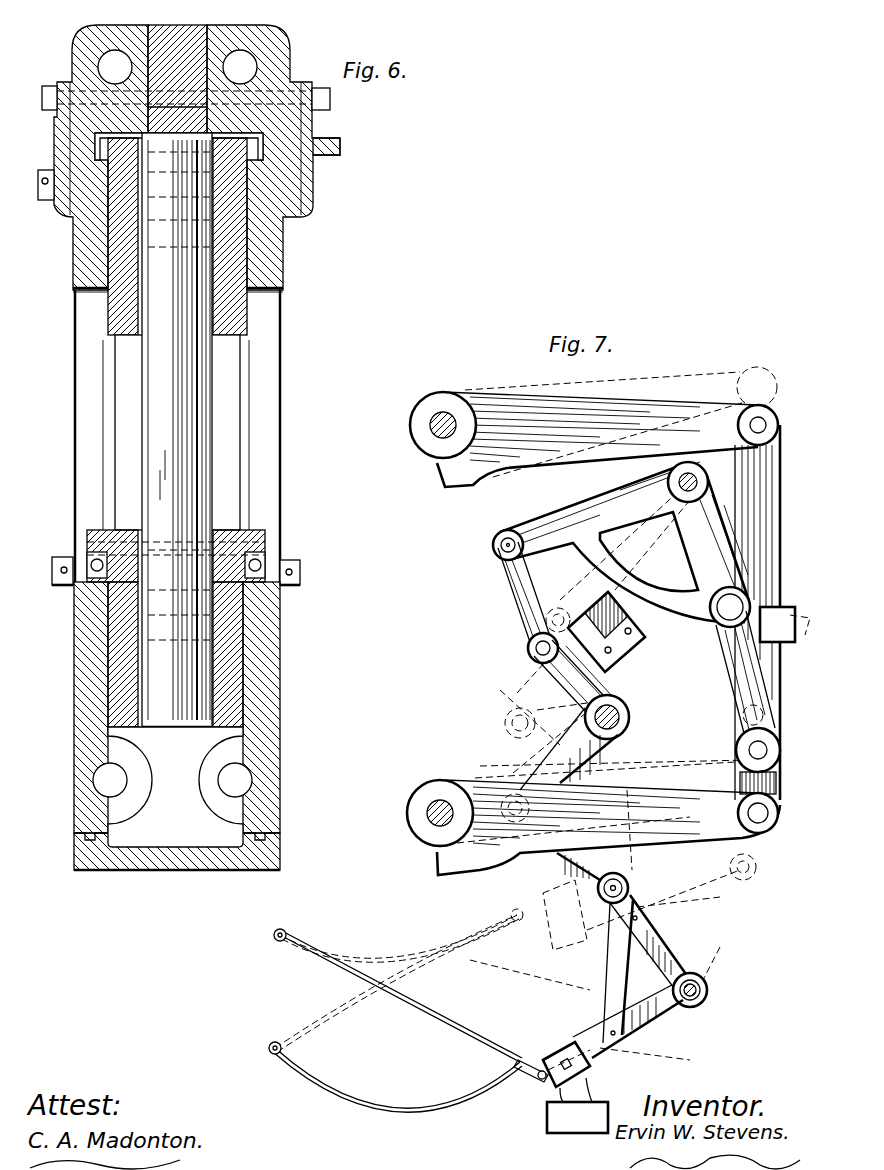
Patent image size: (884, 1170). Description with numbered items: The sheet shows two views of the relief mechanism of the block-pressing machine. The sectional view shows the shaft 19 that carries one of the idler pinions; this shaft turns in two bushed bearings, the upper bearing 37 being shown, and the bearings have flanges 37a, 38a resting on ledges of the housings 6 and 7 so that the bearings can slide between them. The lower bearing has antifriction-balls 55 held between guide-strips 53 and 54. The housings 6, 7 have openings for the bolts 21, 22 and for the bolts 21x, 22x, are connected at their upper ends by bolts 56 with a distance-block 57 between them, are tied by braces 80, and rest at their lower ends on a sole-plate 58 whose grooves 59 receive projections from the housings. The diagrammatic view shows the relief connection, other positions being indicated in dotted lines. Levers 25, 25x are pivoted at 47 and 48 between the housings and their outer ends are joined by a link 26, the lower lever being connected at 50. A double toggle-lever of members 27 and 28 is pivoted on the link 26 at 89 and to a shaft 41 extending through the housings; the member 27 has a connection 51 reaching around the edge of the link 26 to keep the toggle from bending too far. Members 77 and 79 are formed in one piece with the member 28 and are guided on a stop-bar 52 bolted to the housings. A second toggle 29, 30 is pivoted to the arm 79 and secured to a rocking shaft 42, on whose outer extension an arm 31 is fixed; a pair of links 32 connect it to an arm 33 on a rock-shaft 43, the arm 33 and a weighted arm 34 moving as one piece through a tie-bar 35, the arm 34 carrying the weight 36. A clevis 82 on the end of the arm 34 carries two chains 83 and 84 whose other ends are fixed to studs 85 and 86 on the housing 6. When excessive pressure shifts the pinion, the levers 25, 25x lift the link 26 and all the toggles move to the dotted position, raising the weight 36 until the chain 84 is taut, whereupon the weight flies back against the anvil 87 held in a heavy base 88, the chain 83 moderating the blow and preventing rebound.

In FIG. 6, the housing 6 is at (89, 436).
In FIG. 6, the housing 7 is at (264, 436).
In FIG. 6, the shaft 19 is at (150, 500).
In FIG. 7, the shaft 19 is at (780, 425).
In FIG. 6, the bolt 21 is at (115, 67).
In FIG. 6, the bolt 22 is at (240, 67).
In FIG. 6, the bolt 21x is at (110, 780).
In FIG. 6, the bolt 22x is at (235, 780).
In FIG. 7, the lever 25 is at (612, 405).
In FIG. 7, the lever 25x is at (474, 870).
In FIG. 7, the link 26 is at (768, 495).
In FIG. 7, the toggle-lever member 27 is at (720, 675).
In FIG. 7, the toggle-lever member 28 is at (698, 552).
In FIG. 7, the second toggle member 29 is at (515, 605).
In FIG. 7, the second toggle member 30 is at (565, 678).
In FIG. 7, the arm 31 is at (562, 765).
In FIG. 7, the links 32 is at (590, 885).
In FIG. 7, the arm 33 is at (668, 950).
In FIG. 7, the weighted arm 34 is at (648, 1030).
In FIG. 7, the tie-bar 35 is at (618, 982).
In FIG. 7, the weight 36 is at (562, 1054).
In FIG. 6, the bushed bearing 37 is at (118, 312).
In FIG. 6, the flange 37a is at (96, 137).
In FIG. 6, the flange 38a is at (88, 535).
In FIG. 7, the shaft 41 is at (678, 480).
In FIG. 7, the rocking shaft 42 is at (622, 713).
In FIG. 7, the rock-shaft 43 is at (695, 997).
In FIG. 6, the pivot 47 is at (44, 200).
In FIG. 7, the pivot 47 is at (430, 427).
In FIG. 6, the pivot 48 is at (52, 578).
In FIG. 7, the pivot 48 is at (426, 812).
In FIG. 7, the connection 50 is at (780, 813).
In FIG. 7, the connection 51 is at (792, 642).
In FIG. 7, the stop-bar 52 is at (606, 632).
In FIG. 6, the guide-strip 53 is at (270, 560).
In FIG. 6, the guide-strip 54 is at (290, 585).
In FIG. 6, the antifriction-balls 55 is at (262, 568).
In FIG. 6, the bolts 56 is at (41, 93).
In FIG. 6, the distance-block 57 is at (183, 30).
In FIG. 6, the sole-plate 58 is at (170, 862).
In FIG. 6, the grooves 59 is at (82, 856).
In FIG. 7, the member 77 is at (682, 612).
In FIG. 7, the arm 79 is at (540, 530).
In FIG. 6, the braces 80 is at (334, 146).
In FIG. 7, the clevis 82 is at (537, 1079).
In FIG. 7, the chain 83 is at (446, 1026).
In FIG. 7, the chain 84 is at (440, 1106).
In FIG. 7, the stud 85 is at (290, 934).
In FIG. 7, the stud 86 is at (274, 1056).
In FIG. 7, the anvil 87 is at (596, 1093).
In FIG. 6, the base 88 is at (120, 698).
In FIG. 7, the base 88 is at (570, 1126).
In FIG. 7, the pivot 89 is at (780, 752).